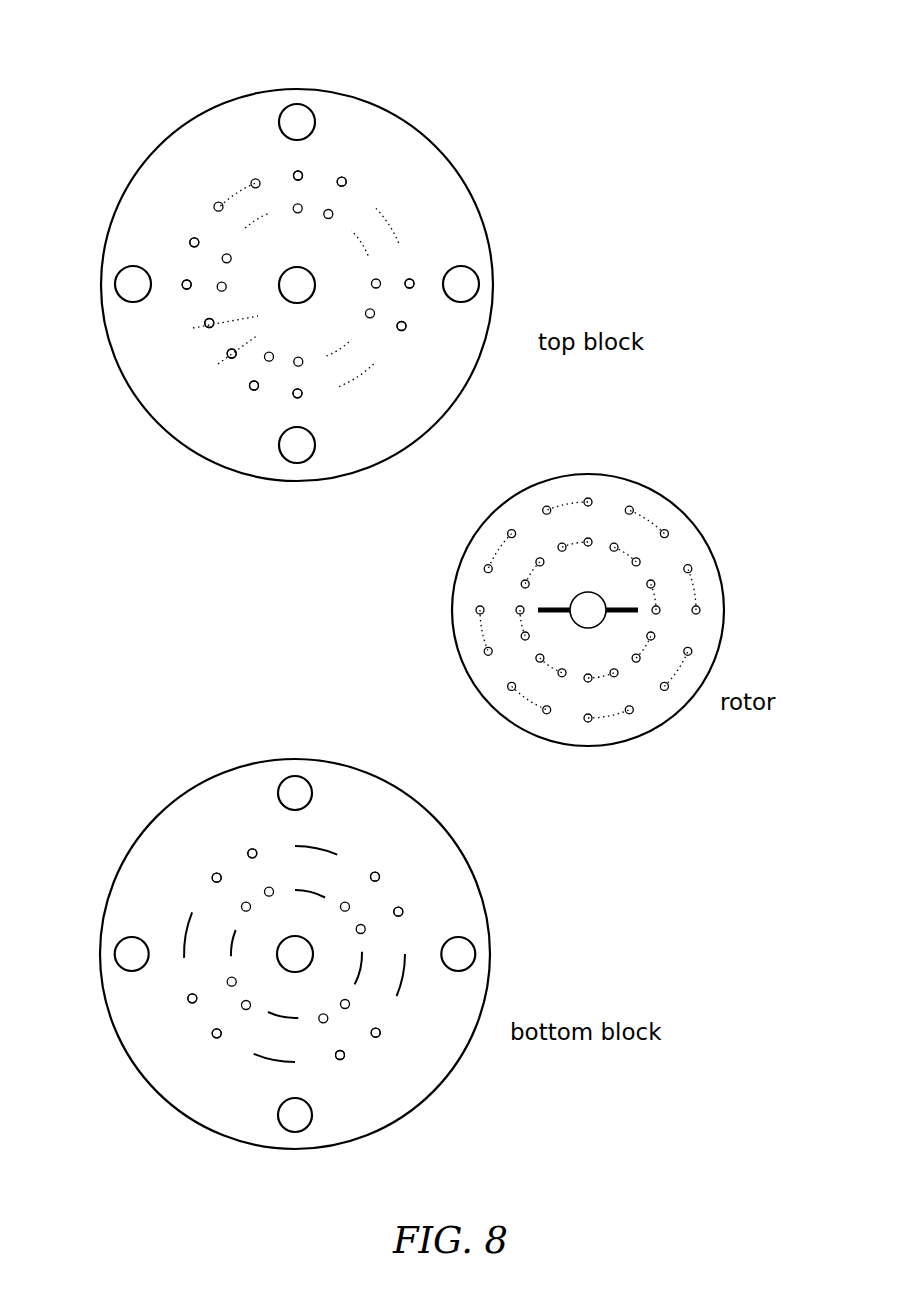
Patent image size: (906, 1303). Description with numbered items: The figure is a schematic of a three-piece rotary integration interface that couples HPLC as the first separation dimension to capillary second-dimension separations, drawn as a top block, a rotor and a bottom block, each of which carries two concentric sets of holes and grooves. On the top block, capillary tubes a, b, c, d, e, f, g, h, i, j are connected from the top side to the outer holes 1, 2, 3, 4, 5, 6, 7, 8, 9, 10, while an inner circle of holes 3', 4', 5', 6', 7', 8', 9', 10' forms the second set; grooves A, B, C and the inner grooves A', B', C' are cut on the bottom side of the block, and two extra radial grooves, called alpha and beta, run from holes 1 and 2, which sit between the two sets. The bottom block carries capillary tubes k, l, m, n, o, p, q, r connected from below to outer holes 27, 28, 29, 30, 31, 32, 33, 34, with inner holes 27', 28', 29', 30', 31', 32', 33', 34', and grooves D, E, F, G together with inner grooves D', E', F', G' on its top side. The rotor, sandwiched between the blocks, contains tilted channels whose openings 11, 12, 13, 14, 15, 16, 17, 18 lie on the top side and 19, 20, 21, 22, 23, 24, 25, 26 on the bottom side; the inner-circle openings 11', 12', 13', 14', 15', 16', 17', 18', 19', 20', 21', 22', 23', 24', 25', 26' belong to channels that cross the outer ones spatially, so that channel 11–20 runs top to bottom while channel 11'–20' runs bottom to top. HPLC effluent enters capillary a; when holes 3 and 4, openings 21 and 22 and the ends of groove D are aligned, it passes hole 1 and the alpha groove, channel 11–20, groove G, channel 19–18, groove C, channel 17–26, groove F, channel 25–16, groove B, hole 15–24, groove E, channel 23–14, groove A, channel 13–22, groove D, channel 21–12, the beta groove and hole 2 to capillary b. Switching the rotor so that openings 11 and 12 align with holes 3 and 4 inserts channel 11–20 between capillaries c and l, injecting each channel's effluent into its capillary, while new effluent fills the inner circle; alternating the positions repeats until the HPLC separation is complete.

The hole 1 is at (233, 366).
The hole 2 is at (210, 337).
The hole 3 is at (182, 296).
The hole 4 is at (188, 250).
The hole 5 is at (290, 170).
The hole 6 is at (335, 172).
The hole 7 is at (410, 272).
The hole 8 is at (409, 320).
The hole 9 is at (304, 402).
The hole 10 is at (263, 398).
The hole 5' is at (296, 222).
The hole 6' is at (327, 228).
The hole 4' is at (236, 263).
The hole 3' is at (233, 290).
The hole 10' is at (275, 345).
The hole 9' is at (302, 350).
The hole 7' is at (366, 281).
The hole 8' is at (359, 312).
The hole-opening 11 is at (507, 679).
The hole-opening 12 is at (487, 661).
The hole-opening 13 is at (521, 531).
The hole-opening 14 is at (536, 510).
The hole-opening 15 is at (671, 542).
The hole-opening 16 is at (690, 560).
The hole-opening 17 is at (663, 695).
The hole-opening 18 is at (637, 703).
The hole-opening 19 is at (579, 713).
The hole-opening 20 is at (555, 718).
The hole-opening 21 is at (473, 602).
The hole-opening 22 is at (479, 576).
The hole-opening 23 is at (598, 495).
The hole-opening 24 is at (620, 509).
The hole-opening 25 is at (696, 618).
The hole-opening 26 is at (697, 643).
The hole-opening 11' is at (550, 650).
The hole-opening 12' is at (536, 633).
The hole-opening 13' is at (548, 570).
The hole-opening 14' is at (564, 557).
The hole-opening 15' is at (628, 570).
The hole-opening 16' is at (639, 590).
The hole-opening 17' is at (628, 650).
The hole-opening 18' is at (612, 663).
The hole-opening 19' is at (587, 669).
The hole-opening 20' is at (568, 665).
The hole-opening 21' is at (515, 603).
The hole-opening 22' is at (537, 591).
The hole-opening 23' is at (590, 551).
The hole-opening 24' is at (610, 556).
The hole-opening 25' is at (665, 618).
The hole-opening 26' is at (640, 631).
The hole 27 is at (225, 1046).
The hole 28 is at (192, 1011).
The hole 29 is at (204, 882).
The hole 30 is at (239, 850).
The hole 31 is at (372, 864).
The hole 32 is at (411, 921).
The hole 33 is at (389, 1028).
The hole 34 is at (330, 1067).
The hole 27' is at (262, 997).
The hole 28' is at (244, 972).
The hole 29' is at (260, 915).
The hole 30' is at (283, 884).
The hole 31' is at (332, 912).
The hole 32' is at (347, 937).
The hole 33' is at (336, 993).
The hole 34' is at (312, 1009).
The groove A is at (235, 188).
The groove A' is at (260, 231).
The groove B is at (394, 223).
The groove B' is at (356, 245).
The groove C is at (359, 383).
The groove C' is at (339, 340).
The groove D is at (177, 935).
The groove D' is at (224, 943).
The groove E is at (316, 838).
The groove E' is at (315, 883).
The groove F is at (410, 975).
The groove F' is at (370, 968).
The groove G is at (274, 1073).
The groove G' is at (283, 1027).
The capillary tube a is at (229, 357).
The capillary tube b is at (206, 326).
The capillary tube c is at (182, 284).
The capillary tube d is at (190, 240).
The capillary tube e is at (298, 171).
The capillary tube f is at (344, 178).
The capillary tube g is at (414, 284).
The capillary tube h is at (405, 329).
The capillary tube i is at (298, 398).
The capillary tube j is at (252, 389).
The capillary tube k is at (214, 1037).
The capillary tube l is at (188, 1000).
The capillary tube m is at (214, 874).
The capillary tube n is at (251, 849).
The capillary tube o is at (378, 873).
The capillary tube p is at (403, 910).
The capillary tube q is at (379, 1036).
The capillary tube r is at (342, 1060).